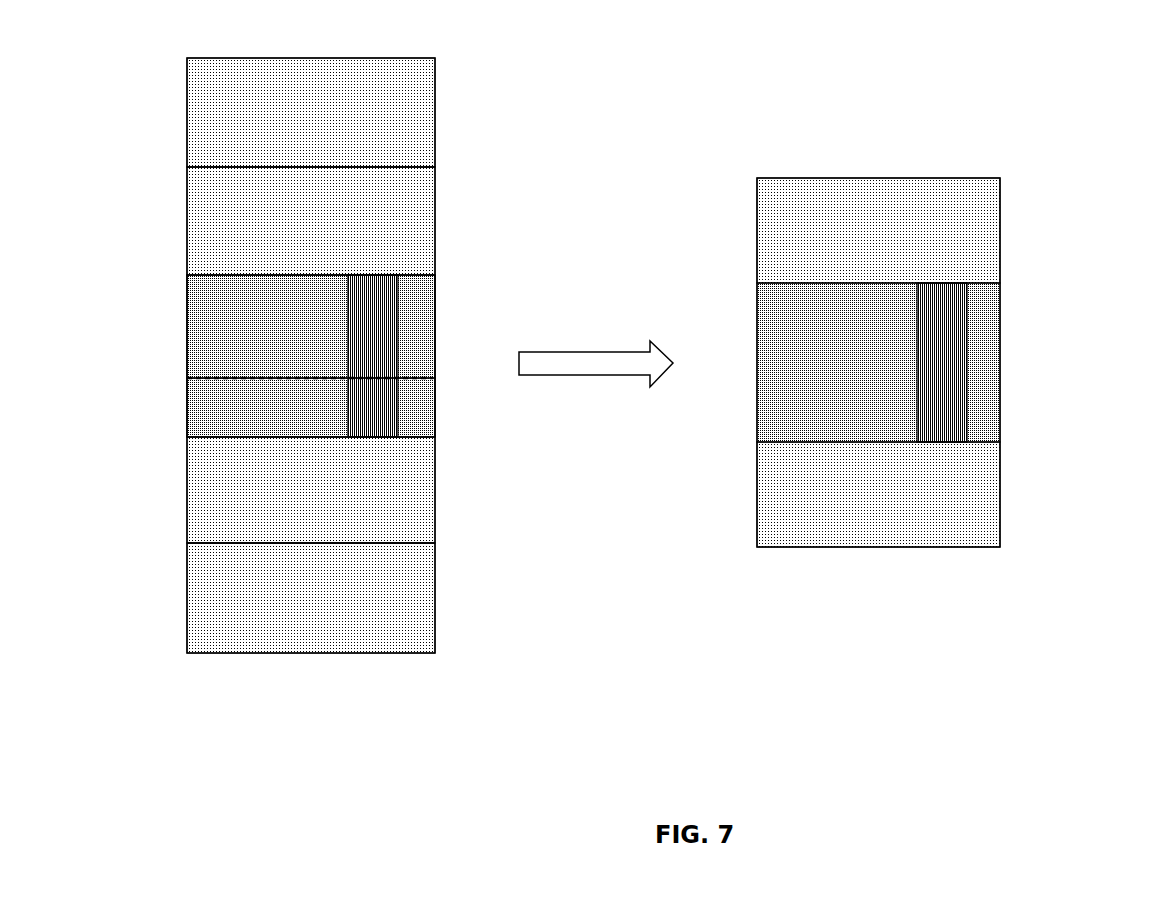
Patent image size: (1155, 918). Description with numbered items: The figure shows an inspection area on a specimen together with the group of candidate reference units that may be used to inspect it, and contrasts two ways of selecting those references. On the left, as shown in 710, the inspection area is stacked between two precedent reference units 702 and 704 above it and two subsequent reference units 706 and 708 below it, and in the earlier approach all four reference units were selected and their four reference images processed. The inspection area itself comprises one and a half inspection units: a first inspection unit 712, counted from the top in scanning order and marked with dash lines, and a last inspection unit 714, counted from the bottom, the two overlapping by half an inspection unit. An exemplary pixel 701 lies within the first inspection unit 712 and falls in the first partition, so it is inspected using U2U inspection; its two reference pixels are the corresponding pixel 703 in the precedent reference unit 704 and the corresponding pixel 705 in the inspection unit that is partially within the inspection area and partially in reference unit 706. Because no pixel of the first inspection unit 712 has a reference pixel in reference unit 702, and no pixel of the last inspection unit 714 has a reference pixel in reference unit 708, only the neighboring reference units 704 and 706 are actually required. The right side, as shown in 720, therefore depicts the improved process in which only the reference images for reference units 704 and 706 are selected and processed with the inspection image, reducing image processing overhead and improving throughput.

The pixel 701 is at (230, 289).
The first precedent reference unit 702 is at (311, 112).
The corresponding pixel in the precedent reference unit 703 is at (228, 193).
The second precedent reference unit 704 is at (593, 225).
The corresponding pixel in the partially-overlapping inspection unit 705 is at (228, 393).
The first subsequent reference unit 706 is at (593, 492).
The second subsequent reference unit 708 is at (311, 598).
The processing of four reference images 710 is at (566, 339).
The first inspection unit 712 is at (437, 274).
The last inspection unit 714 is at (437, 437).
The processing of selected reference images 720 is at (1012, 190).